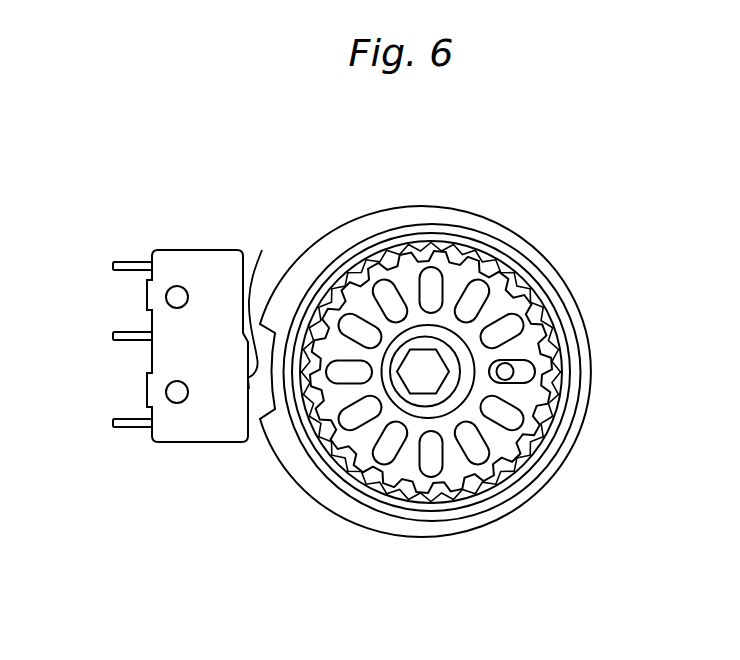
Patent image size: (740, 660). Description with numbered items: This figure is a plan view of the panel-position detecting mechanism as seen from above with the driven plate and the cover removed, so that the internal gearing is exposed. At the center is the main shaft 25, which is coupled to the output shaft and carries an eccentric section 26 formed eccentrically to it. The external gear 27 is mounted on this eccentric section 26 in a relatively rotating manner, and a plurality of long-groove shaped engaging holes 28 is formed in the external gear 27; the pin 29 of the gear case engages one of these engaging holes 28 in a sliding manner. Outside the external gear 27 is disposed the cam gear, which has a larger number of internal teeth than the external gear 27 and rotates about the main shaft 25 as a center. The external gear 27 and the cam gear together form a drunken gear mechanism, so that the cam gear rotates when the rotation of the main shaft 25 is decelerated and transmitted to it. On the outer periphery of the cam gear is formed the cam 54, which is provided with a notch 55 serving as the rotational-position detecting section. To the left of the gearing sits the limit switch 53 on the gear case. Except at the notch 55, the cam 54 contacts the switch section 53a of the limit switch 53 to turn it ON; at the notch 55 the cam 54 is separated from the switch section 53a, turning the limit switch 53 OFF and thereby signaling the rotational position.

The main shaft 25 is at (447, 356).
The eccentric section 26 is at (467, 380).
The external gear 27 is at (517, 437).
The engaging holes 28 is at (432, 458).
The pin 29 is at (513, 367).
The limit switch 53 is at (180, 432).
The switch section 53a is at (262, 250).
The cam 54 is at (447, 212).
The notch 55 is at (255, 401).